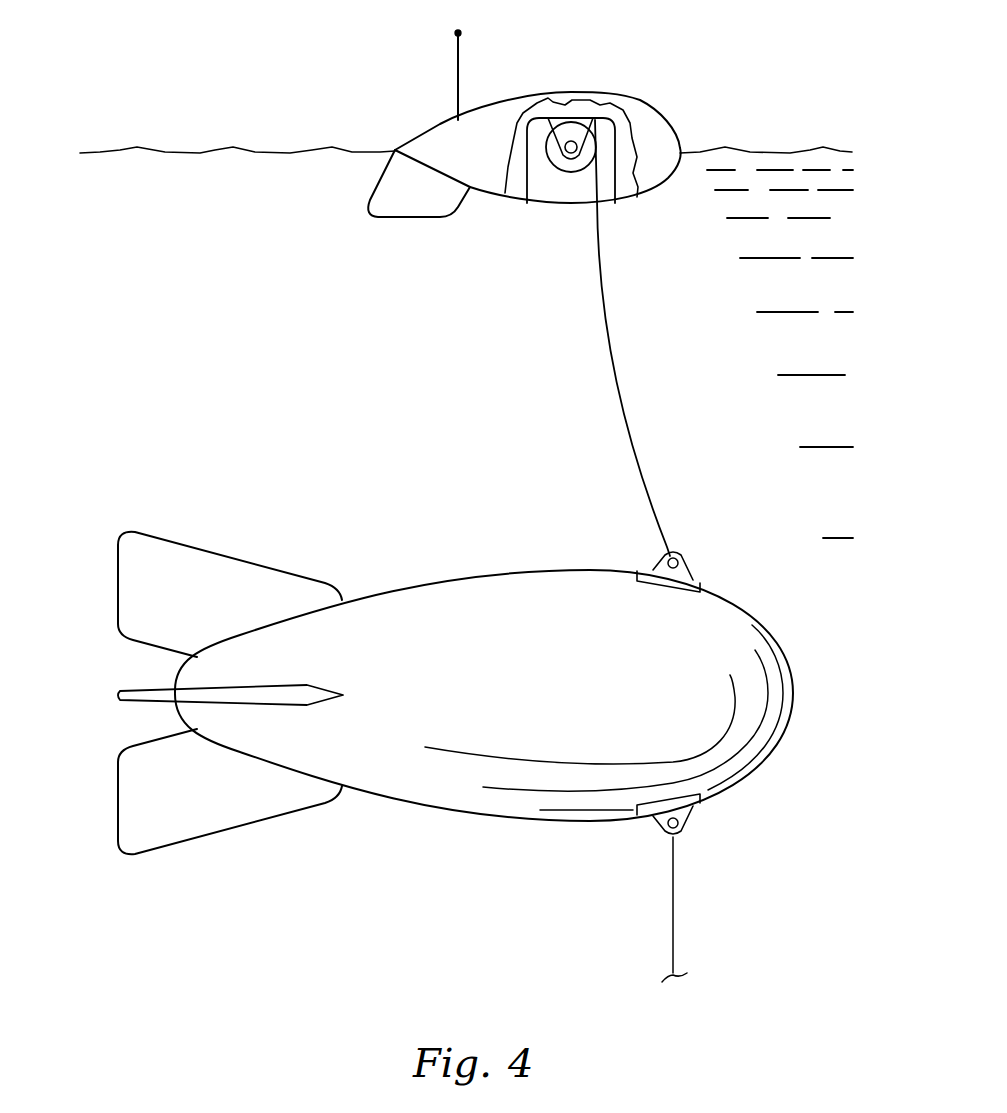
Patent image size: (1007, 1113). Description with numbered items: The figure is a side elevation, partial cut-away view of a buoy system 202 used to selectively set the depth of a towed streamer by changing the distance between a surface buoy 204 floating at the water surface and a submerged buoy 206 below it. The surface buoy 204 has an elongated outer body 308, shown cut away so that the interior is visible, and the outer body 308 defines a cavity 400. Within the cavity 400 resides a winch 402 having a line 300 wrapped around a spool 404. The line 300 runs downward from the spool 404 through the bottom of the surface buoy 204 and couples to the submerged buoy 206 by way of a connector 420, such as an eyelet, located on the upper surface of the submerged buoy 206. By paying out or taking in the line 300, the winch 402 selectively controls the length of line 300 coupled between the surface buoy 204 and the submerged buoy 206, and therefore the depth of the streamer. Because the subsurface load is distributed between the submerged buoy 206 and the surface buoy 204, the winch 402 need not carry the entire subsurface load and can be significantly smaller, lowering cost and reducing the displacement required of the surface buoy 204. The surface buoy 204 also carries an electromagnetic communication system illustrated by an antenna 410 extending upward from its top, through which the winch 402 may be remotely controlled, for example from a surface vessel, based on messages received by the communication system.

The buoy system 202 is at (561, 134).
The surface buoy 204 is at (544, 138).
The submerged buoy 206 is at (455, 751).
The line 300 is at (613, 360).
The elongated outer body 308 is at (512, 103).
The cavity 400 is at (596, 185).
The winch 402 is at (550, 181).
The spool 404 is at (570, 167).
The antenna 410 is at (455, 33).
The connector 420 is at (690, 566).